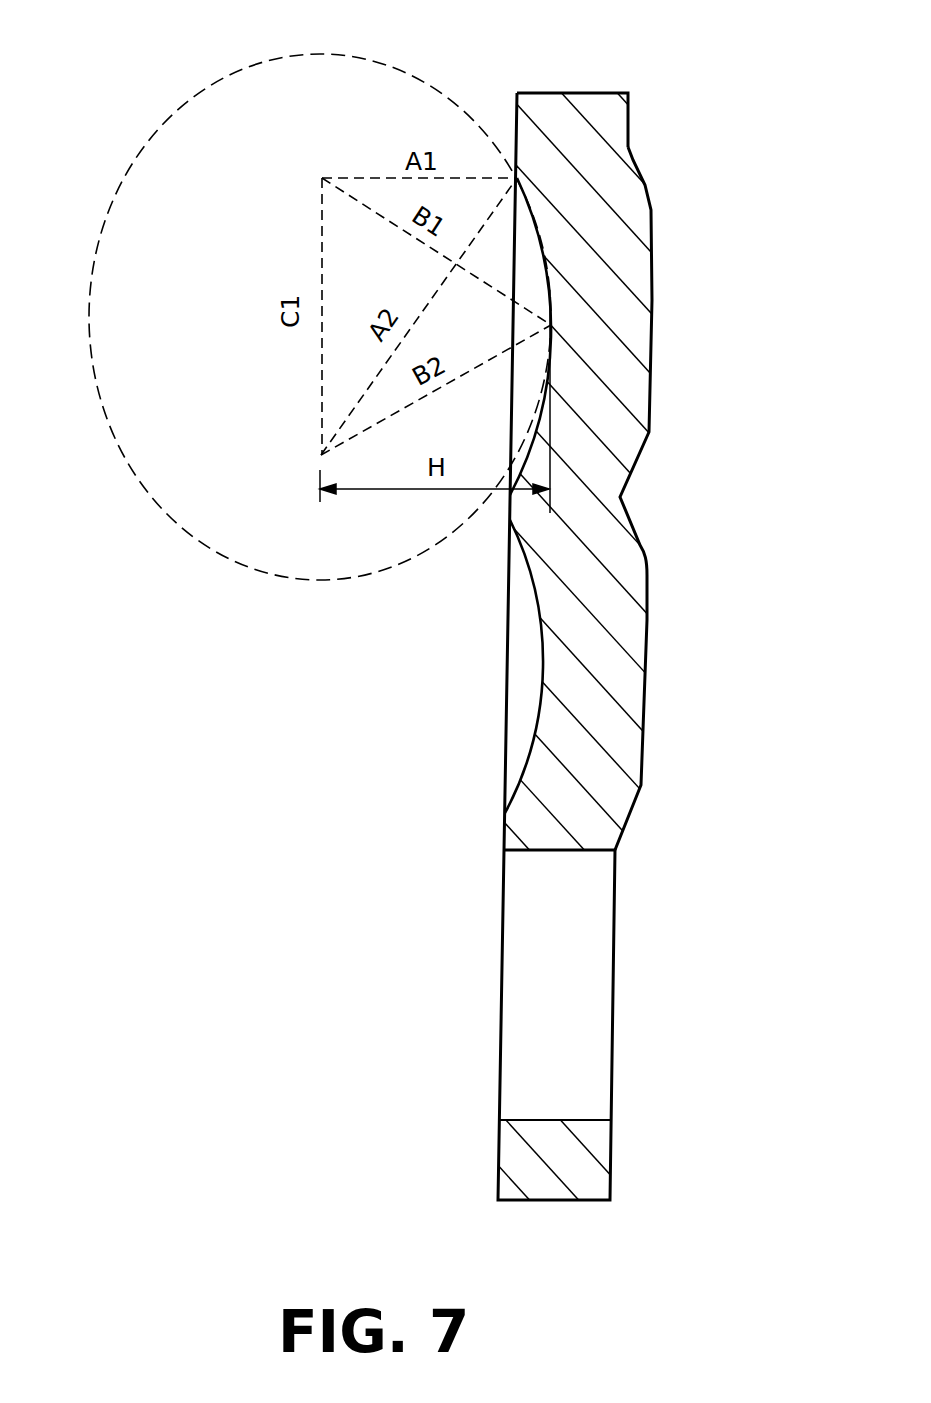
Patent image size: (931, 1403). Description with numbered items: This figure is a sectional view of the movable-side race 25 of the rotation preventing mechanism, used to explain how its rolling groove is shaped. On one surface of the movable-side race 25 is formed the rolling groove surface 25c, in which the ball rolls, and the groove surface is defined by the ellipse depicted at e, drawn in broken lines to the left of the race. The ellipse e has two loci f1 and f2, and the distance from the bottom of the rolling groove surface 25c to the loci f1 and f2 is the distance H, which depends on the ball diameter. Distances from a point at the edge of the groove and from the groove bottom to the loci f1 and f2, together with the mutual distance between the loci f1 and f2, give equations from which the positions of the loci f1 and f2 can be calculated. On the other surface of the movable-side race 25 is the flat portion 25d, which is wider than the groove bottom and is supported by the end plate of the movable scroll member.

The movable-side race 25 is at (594, 647).
The rolling groove surface 25c is at (537, 422).
The flat portion 25d is at (653, 332).
The ellipse e is at (240, 568).
The locus of the ellipse f1 is at (330, 178).
The locus of the ellipse f2 is at (329, 455).